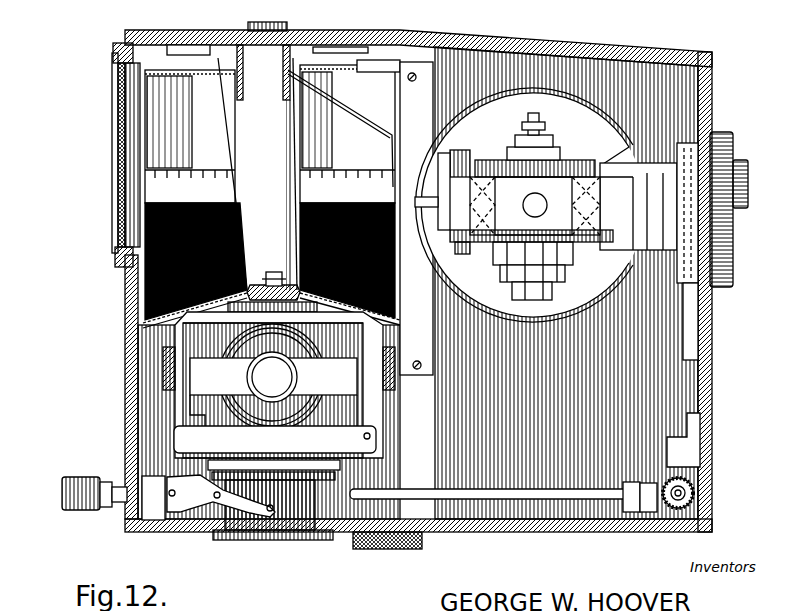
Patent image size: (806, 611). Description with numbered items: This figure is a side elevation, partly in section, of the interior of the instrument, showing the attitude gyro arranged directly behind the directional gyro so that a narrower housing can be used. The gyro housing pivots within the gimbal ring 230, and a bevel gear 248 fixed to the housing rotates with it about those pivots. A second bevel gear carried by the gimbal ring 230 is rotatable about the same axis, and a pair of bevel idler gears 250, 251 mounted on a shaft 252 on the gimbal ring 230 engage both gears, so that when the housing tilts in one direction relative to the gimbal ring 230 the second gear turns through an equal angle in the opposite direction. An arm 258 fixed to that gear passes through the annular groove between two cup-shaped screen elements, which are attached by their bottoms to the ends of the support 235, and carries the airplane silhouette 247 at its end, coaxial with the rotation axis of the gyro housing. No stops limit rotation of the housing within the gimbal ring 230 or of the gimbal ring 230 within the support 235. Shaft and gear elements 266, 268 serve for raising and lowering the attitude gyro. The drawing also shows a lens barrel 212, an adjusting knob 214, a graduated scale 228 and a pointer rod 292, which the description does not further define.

The lens barrel 212 is at (120, 169).
The adjusting knob 214 is at (62, 493).
The scale 228 is at (357, 176).
The pointer rod 292 is at (336, 88).
The airplane silhouette 247 is at (428, 200).
The bevel idler gear 250 is at (470, 146).
The bevel gear 248 is at (462, 163).
The support 235 is at (673, 175).
The arm 258 is at (428, 226).
The shaft 252 is at (455, 250).
The bevel idler gear 251 is at (458, 255).
The gimbal ring 230 is at (580, 223).
The shaft and gear means for raising and lowering the attitude gyro 266 is at (685, 345).
The shaft and gear means for raising and lowering the attitude gyro 268 is at (498, 508).